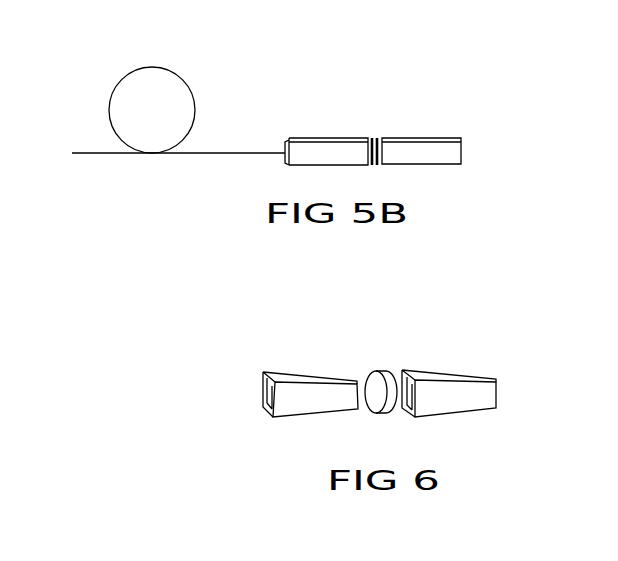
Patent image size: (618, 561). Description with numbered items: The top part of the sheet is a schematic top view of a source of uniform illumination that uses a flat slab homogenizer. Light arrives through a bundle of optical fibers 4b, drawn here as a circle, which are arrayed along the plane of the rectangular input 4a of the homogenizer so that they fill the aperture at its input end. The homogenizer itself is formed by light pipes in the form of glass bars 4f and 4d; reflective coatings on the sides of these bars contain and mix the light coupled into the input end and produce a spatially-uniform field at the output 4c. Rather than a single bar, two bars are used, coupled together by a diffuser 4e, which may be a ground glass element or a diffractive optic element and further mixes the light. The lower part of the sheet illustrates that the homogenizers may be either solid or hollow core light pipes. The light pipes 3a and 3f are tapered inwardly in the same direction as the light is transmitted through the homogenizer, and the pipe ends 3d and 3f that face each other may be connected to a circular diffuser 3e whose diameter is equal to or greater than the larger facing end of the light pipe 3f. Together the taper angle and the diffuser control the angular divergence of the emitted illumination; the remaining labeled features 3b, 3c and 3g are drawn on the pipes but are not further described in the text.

In FIG. 5B, the rectangular input 4a is at (287, 140).
In FIG. 5B, the optical fibers 4b is at (118, 83).
In FIG. 5B, the output 4c is at (462, 148).
In FIG. 5B, the glass bar 4d is at (457, 138).
In FIG. 5B, the diffuser 4e is at (397, 111).
In FIG. 5B, the glass bar 4f is at (323, 148).
In FIG. 6, the light pipe 3a is at (305, 405).
In FIG. 6, the opening in left prism 3b is at (268, 388).
In FIG. 6, the left prism end face 3c is at (263, 372).
In FIG. 6, the end of light pipe 3d is at (303, 375).
In FIG. 6, the diffuser 3e is at (380, 373).
In FIG. 6, the light pipe 3f is at (423, 372).
In FIG. 6, the right prism body 3g is at (498, 392).